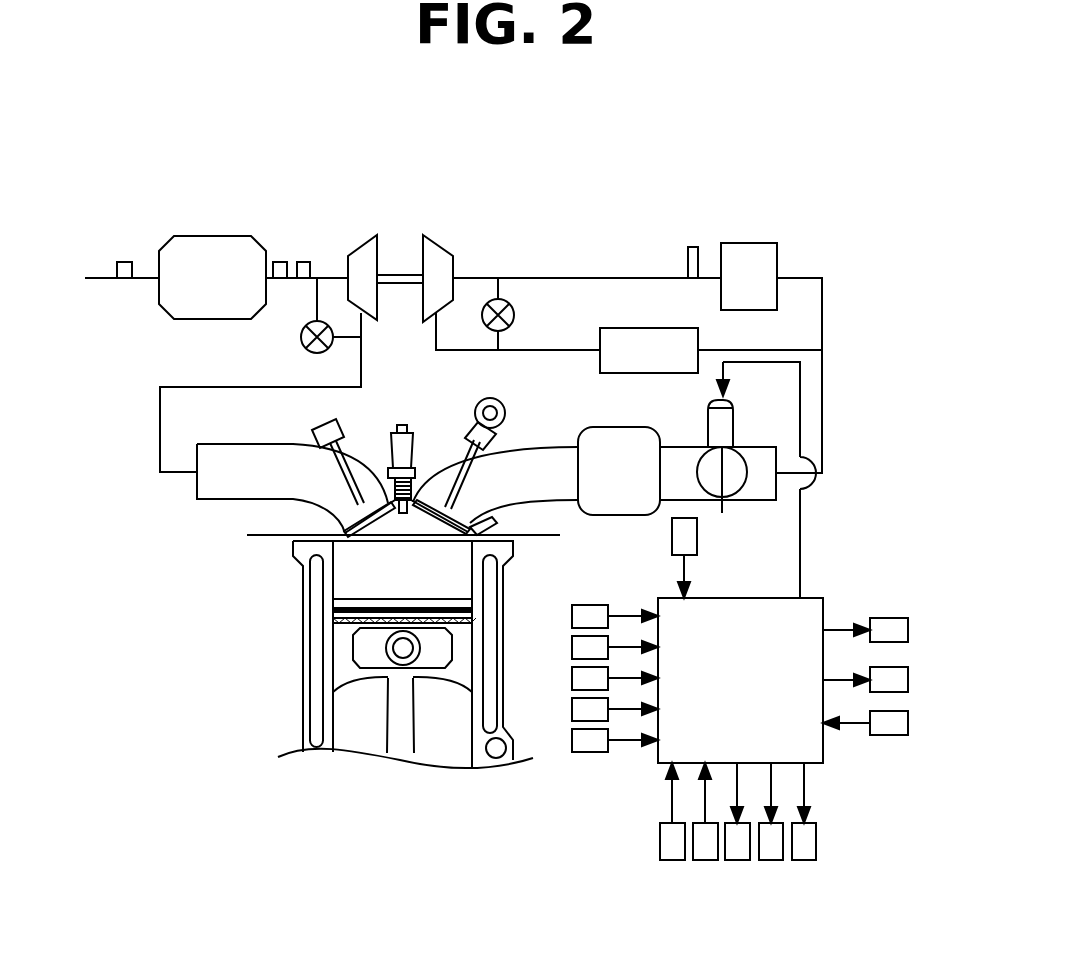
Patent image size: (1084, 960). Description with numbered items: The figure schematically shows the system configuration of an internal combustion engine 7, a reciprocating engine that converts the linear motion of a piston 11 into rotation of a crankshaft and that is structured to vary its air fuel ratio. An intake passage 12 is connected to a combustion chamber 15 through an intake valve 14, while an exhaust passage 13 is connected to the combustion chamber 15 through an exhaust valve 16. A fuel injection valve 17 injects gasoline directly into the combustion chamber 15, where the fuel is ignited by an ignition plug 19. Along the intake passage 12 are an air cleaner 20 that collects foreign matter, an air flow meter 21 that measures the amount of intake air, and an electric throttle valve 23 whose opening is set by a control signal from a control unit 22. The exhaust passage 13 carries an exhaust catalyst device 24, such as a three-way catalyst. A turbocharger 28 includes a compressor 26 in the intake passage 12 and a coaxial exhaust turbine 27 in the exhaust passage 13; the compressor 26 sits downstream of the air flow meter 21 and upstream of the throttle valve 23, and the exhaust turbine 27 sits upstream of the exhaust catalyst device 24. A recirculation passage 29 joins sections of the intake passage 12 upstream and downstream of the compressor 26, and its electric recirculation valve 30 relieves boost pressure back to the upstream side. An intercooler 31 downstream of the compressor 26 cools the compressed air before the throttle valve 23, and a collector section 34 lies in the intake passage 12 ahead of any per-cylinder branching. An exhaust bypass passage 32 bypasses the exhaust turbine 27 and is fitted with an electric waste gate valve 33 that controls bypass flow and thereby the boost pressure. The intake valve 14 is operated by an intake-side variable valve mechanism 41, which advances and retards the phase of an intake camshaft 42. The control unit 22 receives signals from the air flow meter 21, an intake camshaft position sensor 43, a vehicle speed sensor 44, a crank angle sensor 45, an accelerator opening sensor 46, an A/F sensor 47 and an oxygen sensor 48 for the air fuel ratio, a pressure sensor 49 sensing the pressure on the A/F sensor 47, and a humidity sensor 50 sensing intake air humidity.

The internal combustion engine 7 is at (166, 717).
The piston 11 is at (345, 660).
The intake passage 12 is at (562, 497).
The exhaust passage 13 is at (215, 485).
The intake valve 14 is at (449, 487).
The combustion chamber 15 is at (345, 565).
The exhaust valve 16 is at (353, 445).
The fuel injection valve 17 is at (497, 527).
The ignition plug 19 is at (406, 425).
The air cleaner 20 is at (748, 242).
The air flow meter 21 is at (693, 245).
The control unit 22 is at (808, 600).
The electric throttle valve 23 is at (735, 458).
The exhaust catalyst device 24 is at (208, 234).
The compressor 26 is at (440, 247).
The exhaust turbine 27 is at (380, 246).
The turbocharger 28 is at (500, 105).
The recirculation passage 29 is at (500, 290).
The electric recirculation valve 30 is at (515, 318).
The intercooler 31 is at (646, 327).
The exhaust bypass passage 32 is at (315, 299).
The electric waste gate valve 33 is at (308, 350).
The collector section 34 is at (625, 500).
The intake-side variable valve mechanism 41 is at (506, 417).
The intake camshaft 42 is at (500, 404).
The intake camshaft position sensor 43 is at (705, 862).
The vehicle speed sensor 44 is at (672, 862).
The crank angle sensor 45 is at (586, 754).
The accelerator opening sensor 46 is at (571, 706).
The A/F sensor 47 is at (279, 260).
The oxygen sensor 48 is at (120, 260).
The pressure sensor 49 is at (303, 260).
The humidity sensor 50 is at (700, 539).